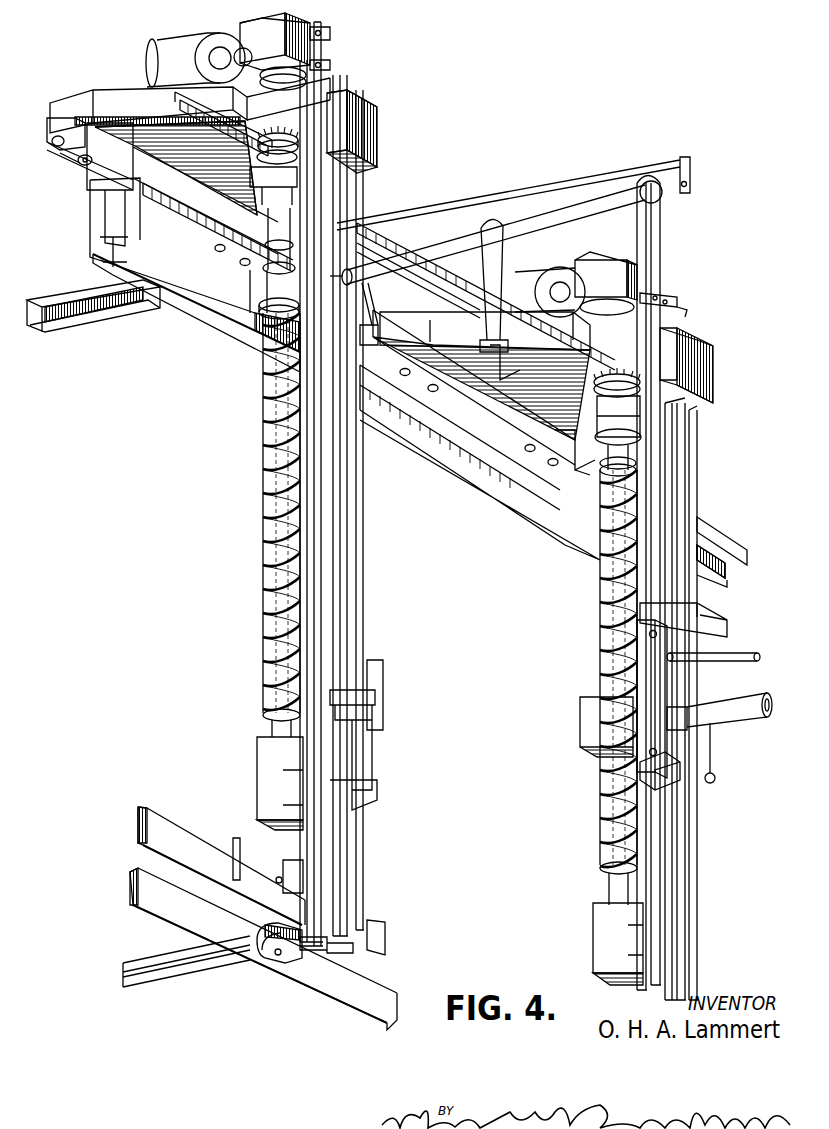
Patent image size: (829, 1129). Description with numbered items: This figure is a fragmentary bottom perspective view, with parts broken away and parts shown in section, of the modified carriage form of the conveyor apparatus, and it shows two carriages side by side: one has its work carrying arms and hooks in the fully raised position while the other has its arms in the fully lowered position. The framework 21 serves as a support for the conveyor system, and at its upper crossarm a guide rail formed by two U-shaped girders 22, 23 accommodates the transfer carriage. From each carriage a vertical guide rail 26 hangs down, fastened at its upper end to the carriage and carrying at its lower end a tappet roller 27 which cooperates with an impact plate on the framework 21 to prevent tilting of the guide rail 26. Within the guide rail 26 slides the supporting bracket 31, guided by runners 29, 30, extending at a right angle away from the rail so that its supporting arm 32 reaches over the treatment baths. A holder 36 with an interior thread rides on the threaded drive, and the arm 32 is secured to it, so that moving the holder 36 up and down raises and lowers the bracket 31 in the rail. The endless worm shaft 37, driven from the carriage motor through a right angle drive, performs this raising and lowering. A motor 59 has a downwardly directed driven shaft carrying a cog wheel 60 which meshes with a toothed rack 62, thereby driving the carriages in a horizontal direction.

The framework 21 is at (90, 234).
The U-shaped girder 22 is at (55, 148).
The U-shaped girder 23 is at (78, 164).
The guide rail 26 is at (357, 566).
The tappet roller 27 is at (277, 942).
The runner 29 is at (640, 636).
The runner 30 is at (612, 776).
The supporting bracket 31 is at (470, 196).
The supporting arm 32 is at (543, 222).
The holder 36 is at (592, 716).
The endless worm shaft 37 is at (270, 492).
The motor 59 is at (176, 57).
The cog wheel 60 is at (293, 140).
The toothed rack 62 is at (160, 124).